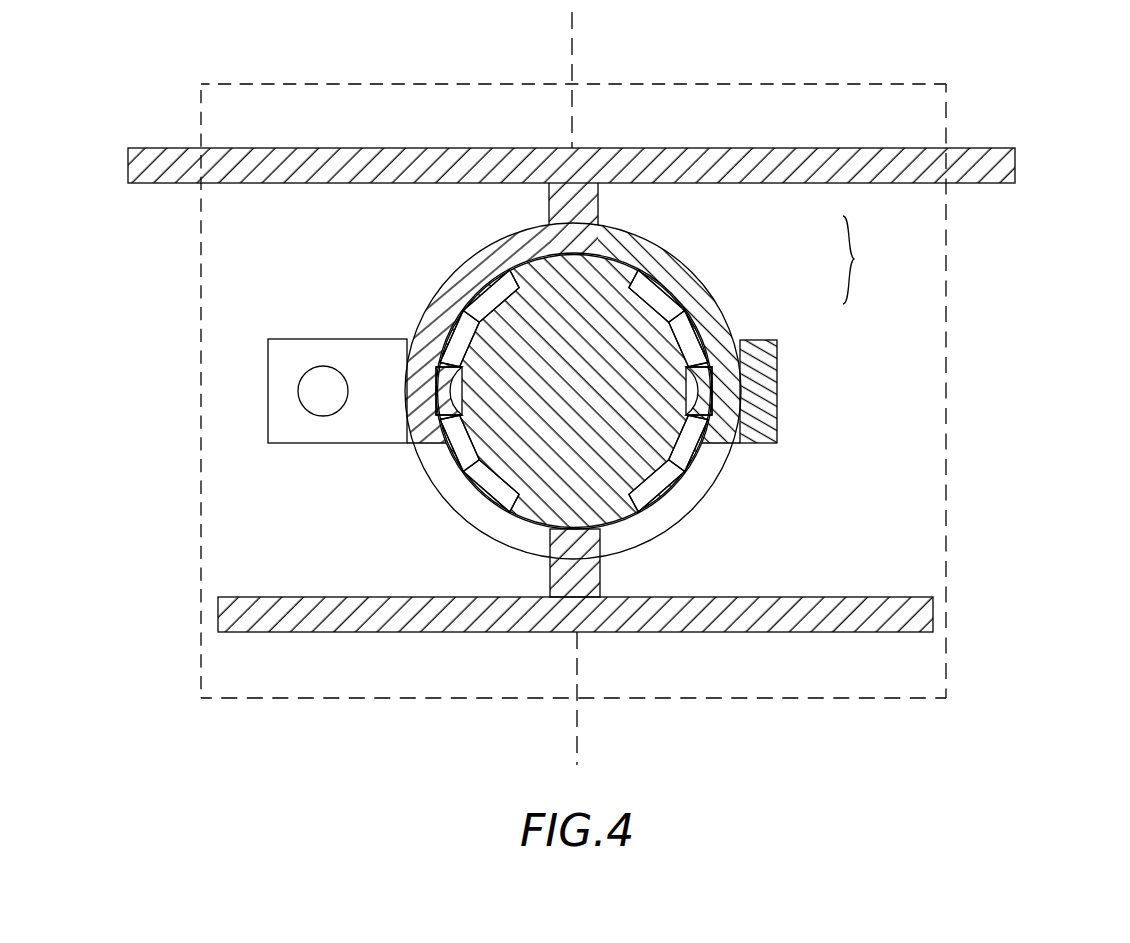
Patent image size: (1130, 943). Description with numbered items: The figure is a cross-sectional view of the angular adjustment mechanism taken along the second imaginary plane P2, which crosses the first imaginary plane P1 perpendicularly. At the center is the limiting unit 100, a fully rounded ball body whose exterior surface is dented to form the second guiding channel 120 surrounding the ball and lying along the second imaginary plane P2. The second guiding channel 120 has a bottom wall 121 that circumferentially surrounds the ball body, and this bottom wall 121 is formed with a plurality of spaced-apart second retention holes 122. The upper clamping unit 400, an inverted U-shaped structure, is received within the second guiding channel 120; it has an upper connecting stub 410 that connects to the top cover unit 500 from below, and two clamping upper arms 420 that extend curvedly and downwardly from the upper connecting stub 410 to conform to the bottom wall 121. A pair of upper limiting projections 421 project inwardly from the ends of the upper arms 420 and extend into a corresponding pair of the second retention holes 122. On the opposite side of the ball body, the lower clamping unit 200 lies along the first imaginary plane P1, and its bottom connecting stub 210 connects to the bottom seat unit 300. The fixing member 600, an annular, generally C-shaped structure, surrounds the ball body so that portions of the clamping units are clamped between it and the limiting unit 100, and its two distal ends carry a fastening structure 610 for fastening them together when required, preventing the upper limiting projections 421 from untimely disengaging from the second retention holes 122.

The first imaginary plane P1 is at (573, 40).
The second imaginary plane P2 is at (948, 112).
The limiting unit 100 is at (508, 315).
The second guiding channel 120 is at (457, 488).
The bottom wall 121 is at (542, 532).
The second retention holes 122 is at (499, 460).
The lower clamping unit 200 is at (613, 567).
The bottom connecting stub 210 is at (594, 573).
The bottom seat unit 300 is at (872, 597).
The upper clamping unit 400 is at (653, 371).
The upper connecting stub 410 is at (590, 203).
The clamping upper arms 420 is at (710, 305).
The upper limiting projections 421 is at (700, 386).
The top cover unit 500 is at (1018, 165).
The fixing member 600 is at (782, 367).
The fastening structure 610 is at (297, 355).